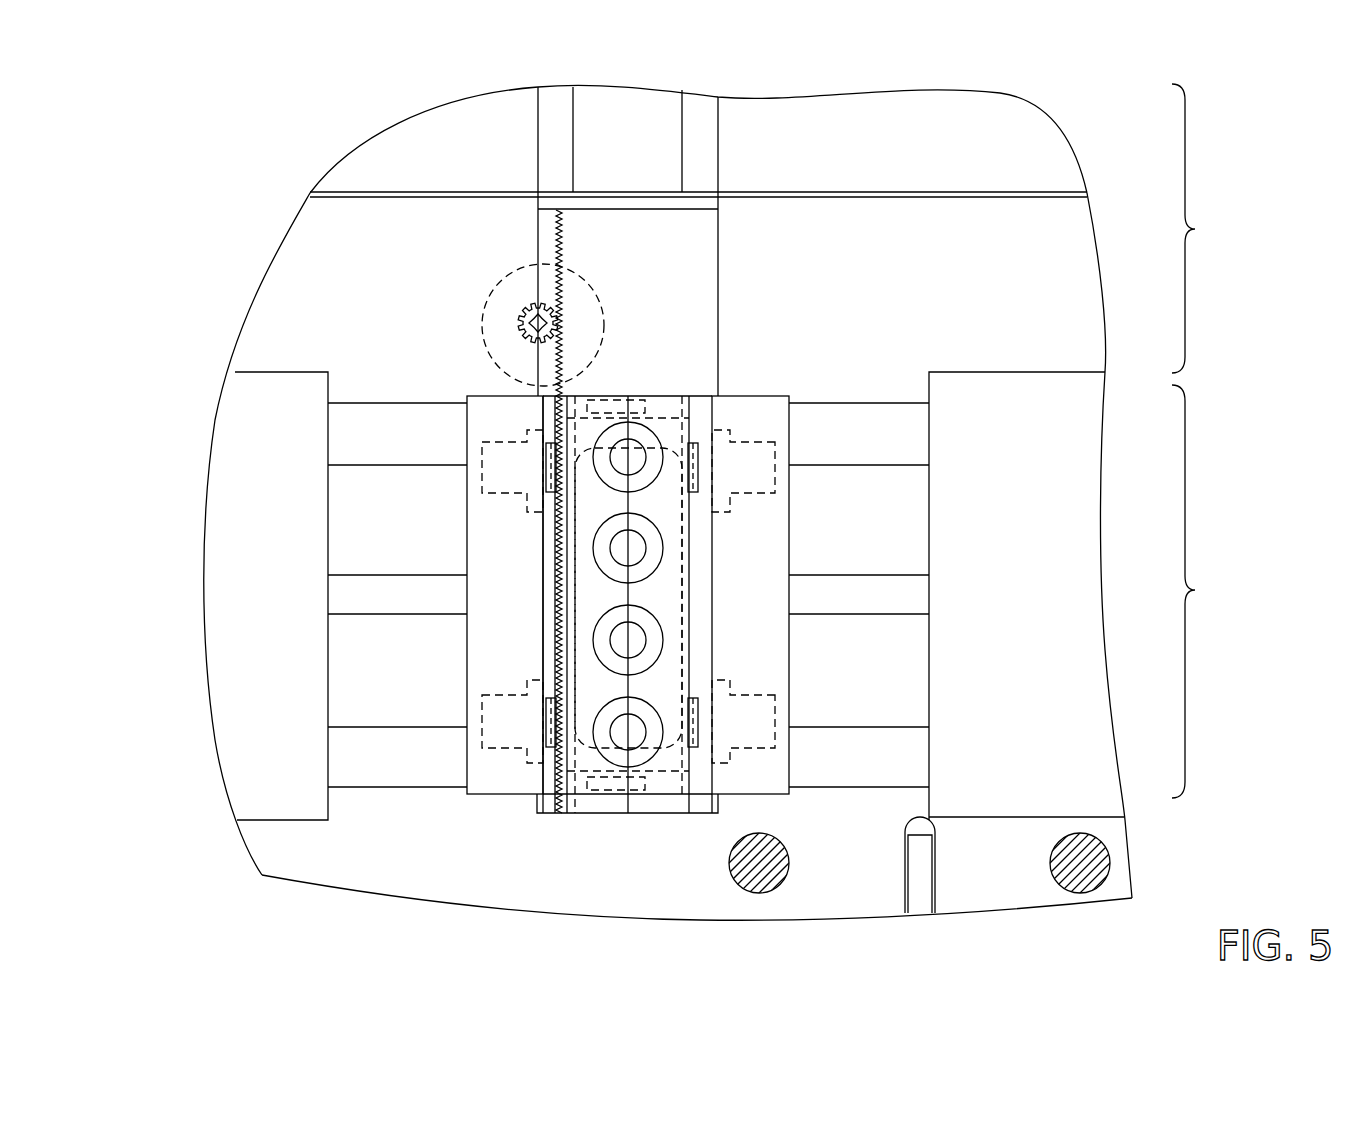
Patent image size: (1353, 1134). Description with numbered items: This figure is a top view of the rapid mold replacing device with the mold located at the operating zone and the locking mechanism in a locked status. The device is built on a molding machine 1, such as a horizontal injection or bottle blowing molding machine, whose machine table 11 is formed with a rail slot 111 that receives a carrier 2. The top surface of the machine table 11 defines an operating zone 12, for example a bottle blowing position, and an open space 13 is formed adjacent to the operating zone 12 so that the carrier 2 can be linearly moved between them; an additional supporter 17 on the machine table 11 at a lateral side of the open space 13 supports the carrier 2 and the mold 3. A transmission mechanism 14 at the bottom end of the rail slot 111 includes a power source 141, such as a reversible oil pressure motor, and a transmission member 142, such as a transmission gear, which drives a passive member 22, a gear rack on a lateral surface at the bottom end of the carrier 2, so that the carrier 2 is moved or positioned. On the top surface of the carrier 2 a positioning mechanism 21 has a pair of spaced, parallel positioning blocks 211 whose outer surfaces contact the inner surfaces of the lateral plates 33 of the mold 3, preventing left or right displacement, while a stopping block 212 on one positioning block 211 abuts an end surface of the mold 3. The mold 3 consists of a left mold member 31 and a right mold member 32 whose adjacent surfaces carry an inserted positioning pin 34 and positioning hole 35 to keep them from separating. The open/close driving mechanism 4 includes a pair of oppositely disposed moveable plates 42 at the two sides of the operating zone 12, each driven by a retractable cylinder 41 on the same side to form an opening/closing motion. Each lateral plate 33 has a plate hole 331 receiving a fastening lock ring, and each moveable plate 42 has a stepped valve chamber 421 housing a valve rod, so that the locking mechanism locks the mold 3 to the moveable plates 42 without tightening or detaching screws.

The molding machine 1 is at (933, 190).
The carrier 2 is at (685, 248).
The mold 3 is at (655, 370).
The open/close driving mechanism 4 is at (614, 543).
The machine table 11 is at (990, 237).
The operating zone 12 is at (1205, 591).
The open space 13 is at (1205, 228).
The transmission mechanism 14 is at (404, 252).
The supporter 17 is at (550, 103).
The positioning mechanism 21 is at (587, 807).
The passive member 22 is at (560, 267).
The left mold member 31 is at (678, 753).
The right mold member 32 is at (585, 754).
The lateral plate 33 is at (760, 408).
The positioning pin 34 is at (633, 790).
The positioning hole 35 is at (552, 778).
The retractable cylinder 41 is at (282, 605).
The moveable plate 42 is at (490, 413).
The rail slot 111 is at (720, 277).
The power source 141 is at (520, 313).
The transmission member 142 is at (490, 307).
The positioning block 211 is at (648, 807).
The stopping block 212 is at (672, 783).
The plate hole 331 is at (698, 497).
The valve chamber 421 is at (503, 497).